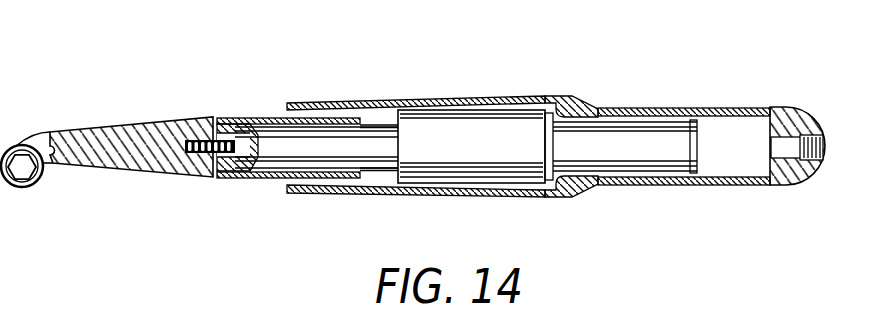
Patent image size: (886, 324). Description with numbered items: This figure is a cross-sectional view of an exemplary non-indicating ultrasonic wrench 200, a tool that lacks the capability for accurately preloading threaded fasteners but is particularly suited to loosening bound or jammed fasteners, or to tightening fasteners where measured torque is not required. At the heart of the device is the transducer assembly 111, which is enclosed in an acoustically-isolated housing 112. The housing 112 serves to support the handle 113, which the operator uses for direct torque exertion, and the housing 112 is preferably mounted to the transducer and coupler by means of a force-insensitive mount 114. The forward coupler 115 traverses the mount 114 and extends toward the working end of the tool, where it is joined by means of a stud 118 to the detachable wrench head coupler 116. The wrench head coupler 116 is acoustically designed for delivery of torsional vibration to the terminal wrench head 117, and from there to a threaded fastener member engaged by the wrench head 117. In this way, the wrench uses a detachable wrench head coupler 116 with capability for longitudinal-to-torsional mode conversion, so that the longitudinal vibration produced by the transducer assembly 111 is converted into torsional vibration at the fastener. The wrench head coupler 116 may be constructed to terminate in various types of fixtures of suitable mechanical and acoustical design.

The tool assembly 200 is at (598, 50).
The transducer assembly 111 is at (527, 110).
The acoustically-isolated housing 112 is at (420, 97).
The handle 113 is at (762, 107).
The force-insensitive mount 114 is at (277, 113).
The forward coupler 115 is at (268, 166).
The detachable wrench head coupler 116 is at (133, 120).
The terminal wrench head 117 is at (11, 188).
The stud 118 is at (192, 155).